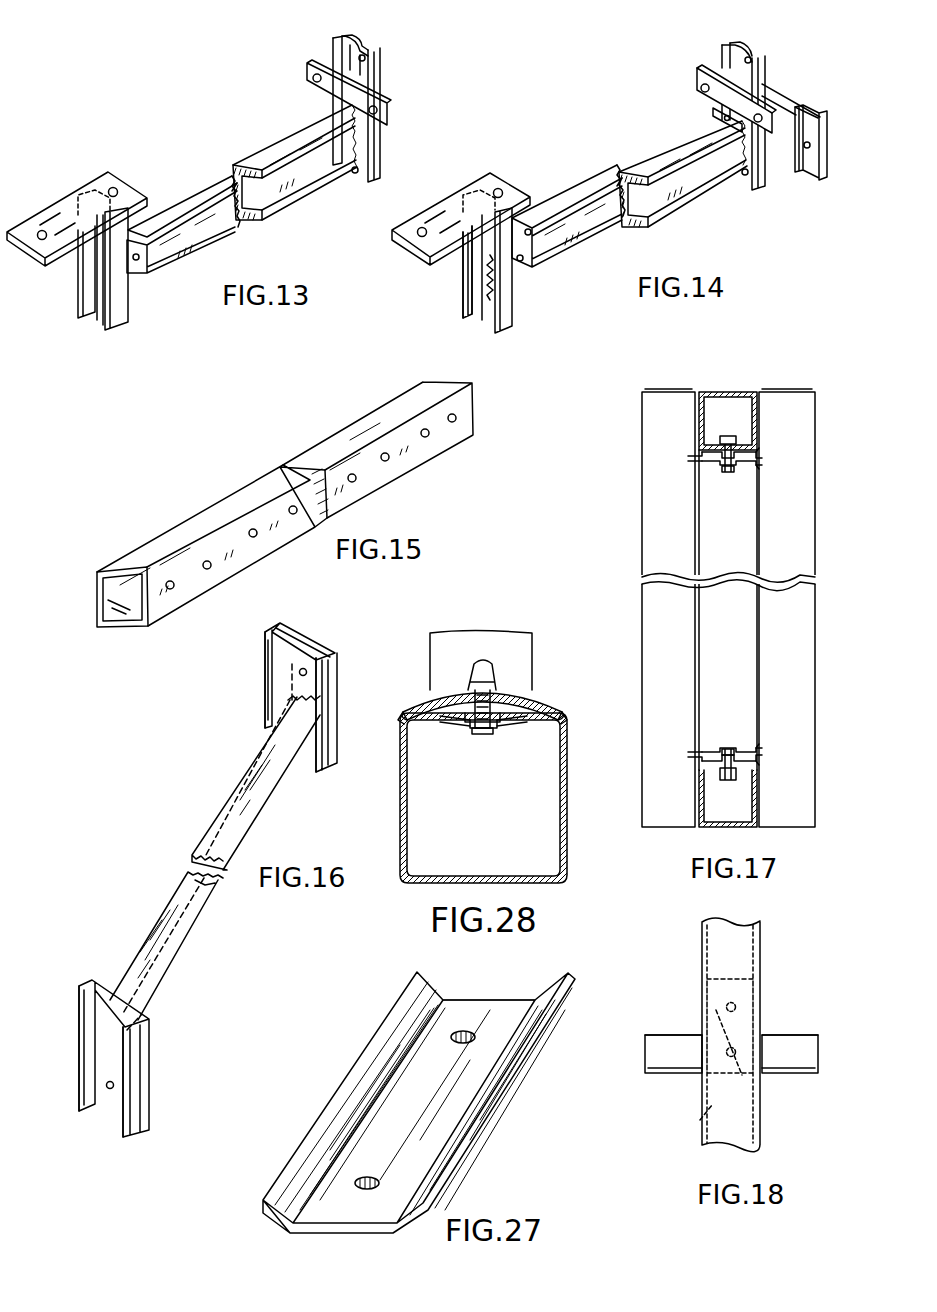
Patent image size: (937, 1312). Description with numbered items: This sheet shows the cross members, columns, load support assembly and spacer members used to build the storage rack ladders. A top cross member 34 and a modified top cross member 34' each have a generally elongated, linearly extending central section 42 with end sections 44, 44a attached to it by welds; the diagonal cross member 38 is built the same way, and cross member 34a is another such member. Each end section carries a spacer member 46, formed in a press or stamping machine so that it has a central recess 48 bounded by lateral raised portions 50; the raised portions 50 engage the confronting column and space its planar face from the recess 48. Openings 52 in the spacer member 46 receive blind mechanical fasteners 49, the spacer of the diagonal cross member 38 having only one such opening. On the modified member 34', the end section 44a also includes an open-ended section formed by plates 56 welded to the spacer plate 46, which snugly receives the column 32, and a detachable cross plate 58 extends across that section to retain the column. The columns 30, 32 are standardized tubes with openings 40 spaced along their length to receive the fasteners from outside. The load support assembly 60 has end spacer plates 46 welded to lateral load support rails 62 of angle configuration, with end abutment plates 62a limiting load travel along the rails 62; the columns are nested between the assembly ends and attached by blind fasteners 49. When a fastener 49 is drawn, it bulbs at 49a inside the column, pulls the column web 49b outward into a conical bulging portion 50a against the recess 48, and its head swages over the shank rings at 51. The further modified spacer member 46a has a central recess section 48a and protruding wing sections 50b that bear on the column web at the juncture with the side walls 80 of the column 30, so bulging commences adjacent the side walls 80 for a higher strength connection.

In FIG. 15, the column 30 is at (480, 406).
In FIG. 28, the column 30 is at (570, 828).
In FIG. 18, the column 30 is at (745, 938).
In FIG. 15, the column 32 is at (425, 450).
In FIG. 17, the column 32 is at (726, 391).
In FIG. 13, the top cross member 34 is at (223, 199).
In FIG. 14, the top cross member 34' is at (628, 180).
In FIG. 28, the cross member 34a is at (443, 655).
In FIG. 16, the diagonal cross member 38 is at (196, 953).
In FIG. 15, the openings 40 is at (453, 424).
In FIG. 28, the openings 40 is at (480, 735).
In FIG. 13, the central section 42 is at (289, 172).
In FIG. 14, the central section 42 is at (675, 180).
In FIG. 16, the central section 42 is at (256, 761).
In FIG. 13, the end section 44 is at (125, 318).
In FIG. 14, the end section 44 is at (508, 328).
In FIG. 13, the end section 44a is at (380, 148).
In FIG. 14, the end section 44a is at (770, 186).
In FIG. 13, the spacer member 46 is at (128, 306).
In FIG. 14, the spacer member 46 is at (724, 50).
In FIG. 16, the spacer member 46 is at (328, 697).
In FIG. 17, the spacer member 46 is at (728, 601).
In FIG. 28, the spacer member 46a is at (501, 701).
In FIG. 27, the spacer member 46a is at (419, 1115).
In FIG. 13, the central recess 48 is at (370, 48).
In FIG. 14, the central recess 48 is at (762, 52).
In FIG. 16, the central recess 48 is at (293, 645).
In FIG. 17, the central recess 48 is at (745, 452).
In FIG. 28, the central recess section 48a is at (440, 706).
In FIG. 27, the central recess section 48a is at (457, 1007).
In FIG. 28, the blind mechanical fastener 49 is at (539, 688).
In FIG. 17, the blind mechanical fastener 49 is at (737, 438).
In FIG. 28, the bulb 49a is at (500, 722).
In FIG. 28, the web 49b is at (538, 722).
In FIG. 13, the raised portions 50 is at (382, 78).
In FIG. 14, the raised portions 50 is at (745, 45).
In FIG. 16, the raised portions 50 is at (282, 626).
In FIG. 17, the raised portions 50 is at (758, 458).
In FIG. 28, the bulging portion 50a is at (452, 722).
In FIG. 17, the bulging portion 50a is at (703, 757).
In FIG. 28, the wing sections 50b is at (576, 719).
In FIG. 27, the wing sections 50b is at (520, 1110).
In FIG. 28, the swaged fastener head 51 is at (497, 660).
In FIG. 13, the openings 52 is at (340, 38).
In FIG. 14, the openings 52 is at (752, 58).
In FIG. 16, the openings 52 is at (307, 668).
In FIG. 27, the openings 52 is at (466, 1032).
In FIG. 14, the plates 56 is at (790, 96).
In FIG. 14, the cross plate 58 is at (829, 126).
In FIG. 17, the load support assembly 60 is at (640, 666).
In FIG. 17, the load support rails 62 is at (805, 701).
In FIG. 18, the load support rails 62 is at (676, 1063).
In FIG. 17, the end abutment plates 62a is at (661, 390).
In FIG. 18, the end abutment plates 62a is at (795, 1003).
In FIG. 28, the side walls 80 is at (401, 840).